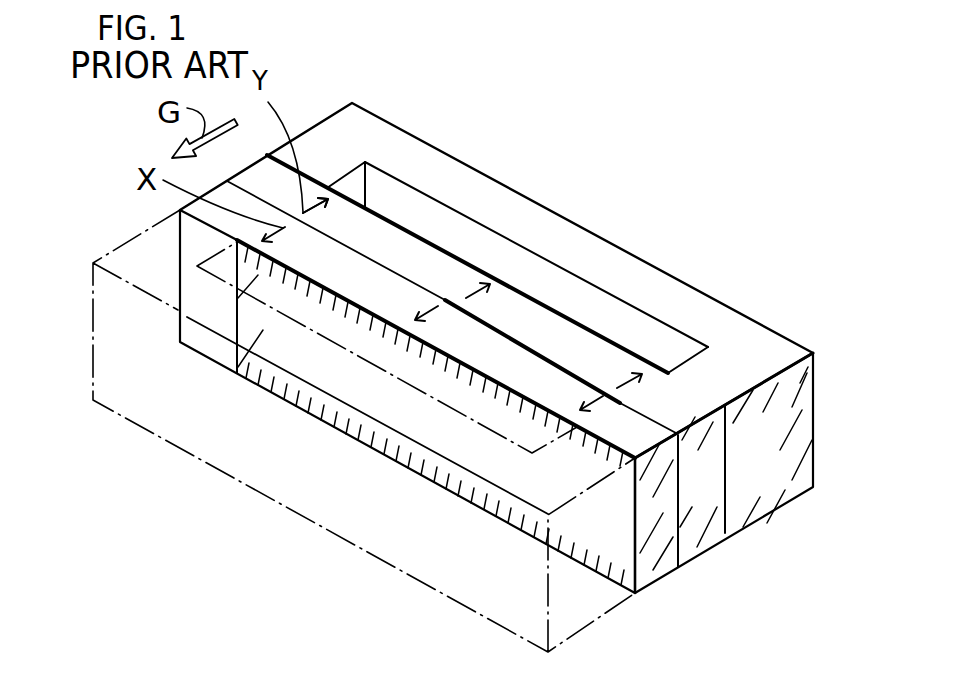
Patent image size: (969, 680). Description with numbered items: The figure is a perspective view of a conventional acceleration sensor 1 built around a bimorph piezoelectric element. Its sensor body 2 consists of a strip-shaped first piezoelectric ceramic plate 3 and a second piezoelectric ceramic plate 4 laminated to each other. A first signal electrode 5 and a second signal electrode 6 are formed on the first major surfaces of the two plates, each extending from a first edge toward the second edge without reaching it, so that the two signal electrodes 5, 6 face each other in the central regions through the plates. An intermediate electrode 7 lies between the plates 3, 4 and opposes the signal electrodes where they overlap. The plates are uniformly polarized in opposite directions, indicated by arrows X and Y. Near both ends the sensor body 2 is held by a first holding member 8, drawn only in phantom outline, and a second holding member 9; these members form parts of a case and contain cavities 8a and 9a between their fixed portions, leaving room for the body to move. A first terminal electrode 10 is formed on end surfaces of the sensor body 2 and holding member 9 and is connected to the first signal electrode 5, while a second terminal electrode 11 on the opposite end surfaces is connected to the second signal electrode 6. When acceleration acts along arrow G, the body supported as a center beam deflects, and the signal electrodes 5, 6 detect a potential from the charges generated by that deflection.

The acceleration sensor 1 is at (401, 112).
The sensor body 2 is at (550, 303).
The first piezoelectric ceramic plate 3 is at (345, 278).
The second piezoelectric ceramic plate 4 is at (430, 267).
The first signal electrode 5 is at (384, 445).
The second signal electrode 6 is at (468, 296).
The intermediate electrode 7 is at (545, 357).
The first holding member 8 is at (108, 320).
The cavity 8a is at (214, 278).
The second holding member 9 is at (547, 207).
The cavity 9a is at (655, 335).
The first terminal electrode 10 is at (780, 450).
The second terminal electrode 11 is at (328, 113).